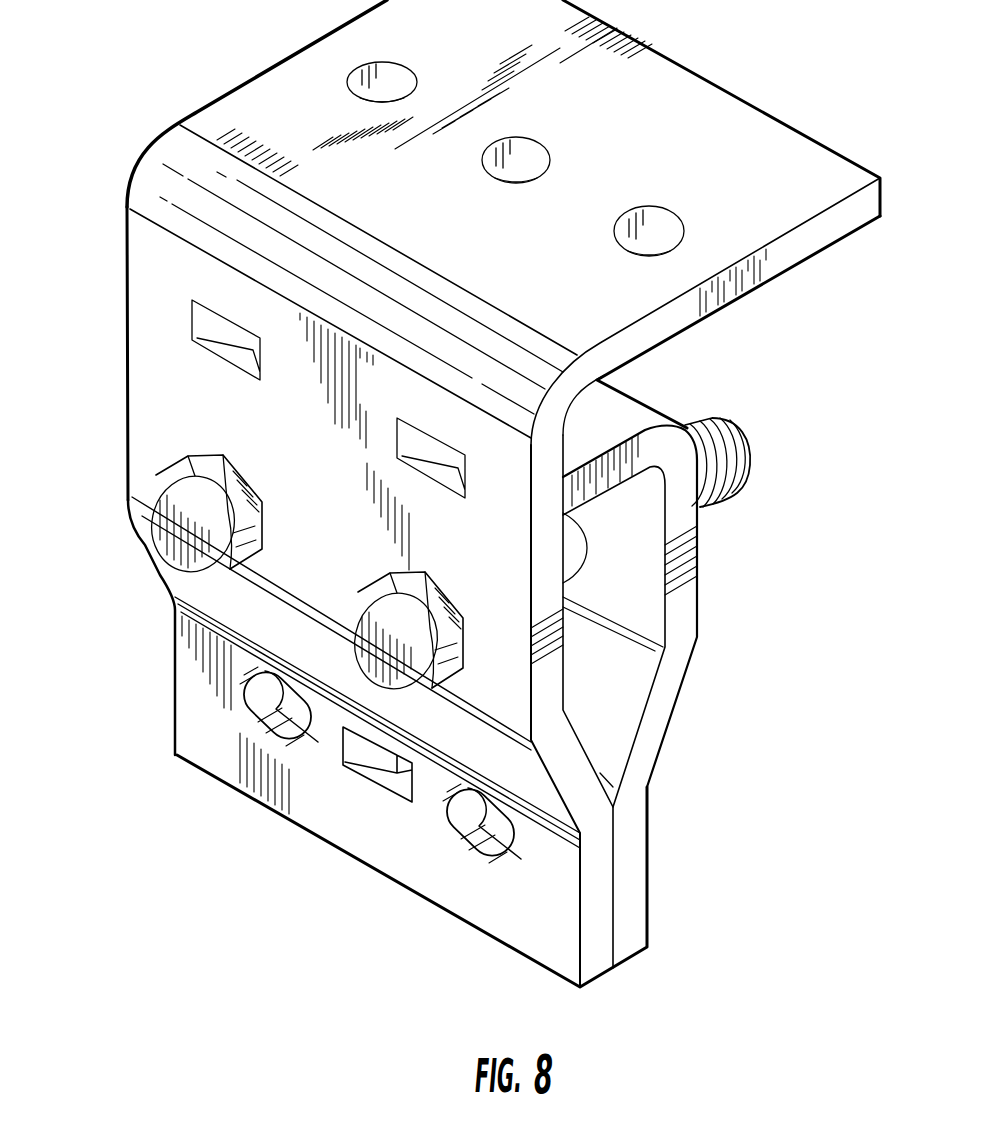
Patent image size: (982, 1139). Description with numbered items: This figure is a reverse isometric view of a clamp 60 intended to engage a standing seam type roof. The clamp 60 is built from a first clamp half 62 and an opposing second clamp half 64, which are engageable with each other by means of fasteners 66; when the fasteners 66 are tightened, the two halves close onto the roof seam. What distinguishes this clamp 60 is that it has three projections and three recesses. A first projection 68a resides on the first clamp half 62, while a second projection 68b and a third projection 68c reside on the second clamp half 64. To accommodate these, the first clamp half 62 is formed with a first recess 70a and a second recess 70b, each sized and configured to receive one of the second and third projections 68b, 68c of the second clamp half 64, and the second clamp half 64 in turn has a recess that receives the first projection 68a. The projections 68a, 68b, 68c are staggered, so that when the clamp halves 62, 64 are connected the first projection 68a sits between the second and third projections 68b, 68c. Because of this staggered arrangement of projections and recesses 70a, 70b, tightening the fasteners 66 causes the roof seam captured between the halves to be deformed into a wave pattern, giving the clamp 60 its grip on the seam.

The clamp 60 is at (457, 493).
The first clamp half 62 is at (162, 397).
The second clamp half 64 is at (685, 608).
The fasteners 66 is at (380, 610).
The first projection 68a is at (368, 758).
The second projection 68b is at (498, 825).
The third projection 68c is at (297, 708).
The first recess 70a is at (250, 695).
The second recess 70b is at (465, 822).